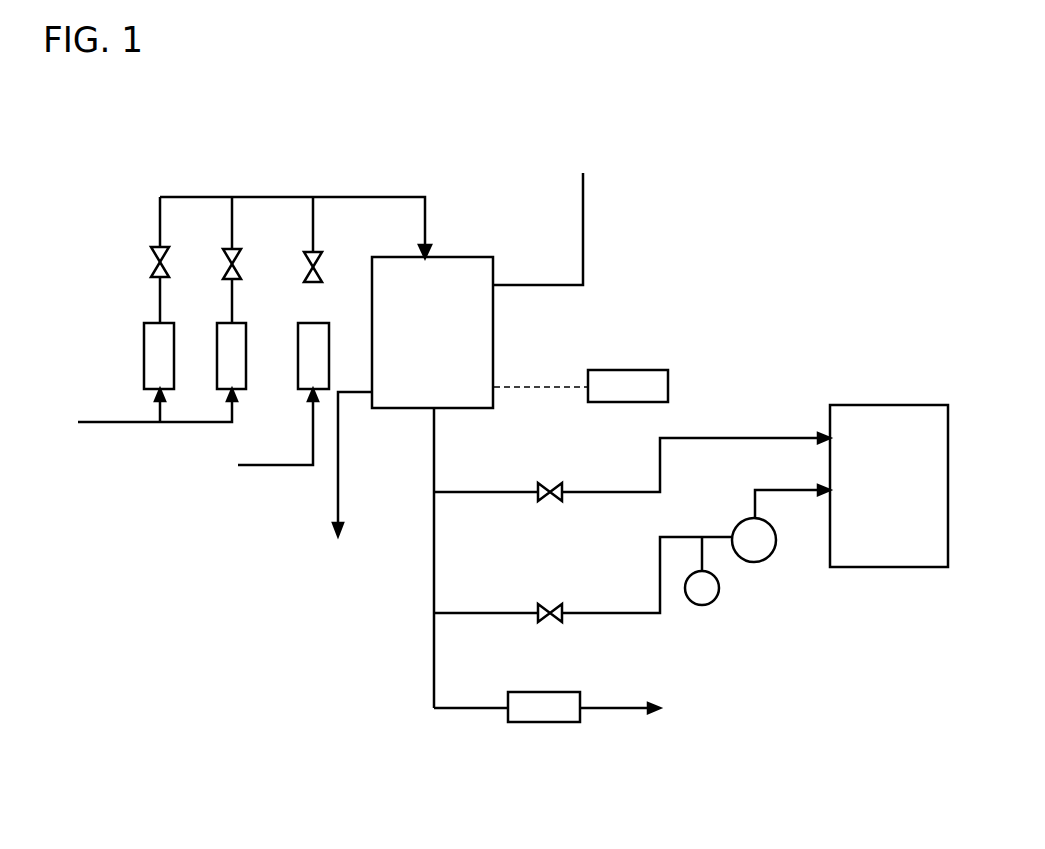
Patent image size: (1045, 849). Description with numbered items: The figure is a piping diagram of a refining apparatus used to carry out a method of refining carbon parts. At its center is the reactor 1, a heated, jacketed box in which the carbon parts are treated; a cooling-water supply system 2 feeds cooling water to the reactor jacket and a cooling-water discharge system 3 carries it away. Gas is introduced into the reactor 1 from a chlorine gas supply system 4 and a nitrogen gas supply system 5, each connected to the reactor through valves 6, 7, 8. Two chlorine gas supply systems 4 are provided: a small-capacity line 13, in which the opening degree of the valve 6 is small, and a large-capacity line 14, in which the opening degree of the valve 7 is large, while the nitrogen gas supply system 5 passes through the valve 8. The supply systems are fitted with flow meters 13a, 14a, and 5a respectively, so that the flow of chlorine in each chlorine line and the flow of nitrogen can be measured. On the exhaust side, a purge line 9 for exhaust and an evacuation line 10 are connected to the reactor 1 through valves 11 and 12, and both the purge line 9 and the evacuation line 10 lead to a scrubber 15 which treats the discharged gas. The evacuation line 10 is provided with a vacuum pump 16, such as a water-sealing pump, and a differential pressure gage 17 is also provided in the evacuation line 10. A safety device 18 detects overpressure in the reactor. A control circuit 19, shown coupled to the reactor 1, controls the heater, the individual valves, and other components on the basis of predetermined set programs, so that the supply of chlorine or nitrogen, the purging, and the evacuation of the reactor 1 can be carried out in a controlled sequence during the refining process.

The reactor 1 is at (494, 324).
The cooling-water supply system 2 is at (584, 226).
The cooling-water discharge system 3 is at (340, 477).
The chlorine gas supply system 4 is at (117, 424).
The nitrogen gas supply system 5 is at (290, 467).
The flow meter 5a is at (298, 362).
The valve 6 is at (152, 257).
The valve 7 is at (226, 257).
The valve 8 is at (306, 259).
The purge line 9 is at (617, 491).
The evacuation line 10 is at (623, 612).
The valve 11 is at (538, 485).
The valve 12 is at (538, 606).
The small-capacity line 13 is at (158, 305).
The flow meter 13a is at (144, 345).
The large-capacity line 14 is at (230, 302).
The flow meter 14a is at (247, 343).
The scrubber 15 is at (860, 405).
The vacuum pump 16 is at (770, 557).
The differential pressure gage 17 is at (700, 605).
The safety device 18 is at (602, 710).
The control circuit 19 is at (630, 370).